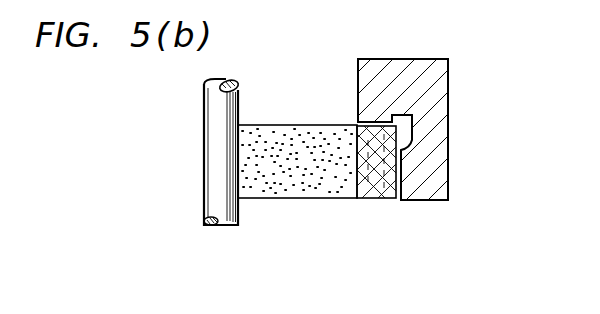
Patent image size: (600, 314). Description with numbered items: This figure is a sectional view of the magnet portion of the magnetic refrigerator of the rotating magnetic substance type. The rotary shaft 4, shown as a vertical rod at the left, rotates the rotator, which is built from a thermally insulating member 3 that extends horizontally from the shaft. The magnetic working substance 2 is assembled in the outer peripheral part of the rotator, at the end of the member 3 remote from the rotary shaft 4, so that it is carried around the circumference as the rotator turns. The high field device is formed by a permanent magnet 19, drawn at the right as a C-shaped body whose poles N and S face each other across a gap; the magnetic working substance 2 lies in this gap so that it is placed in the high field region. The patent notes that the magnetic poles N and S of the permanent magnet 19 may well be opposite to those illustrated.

The magnetic working substance 2 is at (375, 203).
The member 3 is at (327, 198).
The rotary shaft 4 is at (203, 107).
The permanent magnet 19 is at (448, 75).